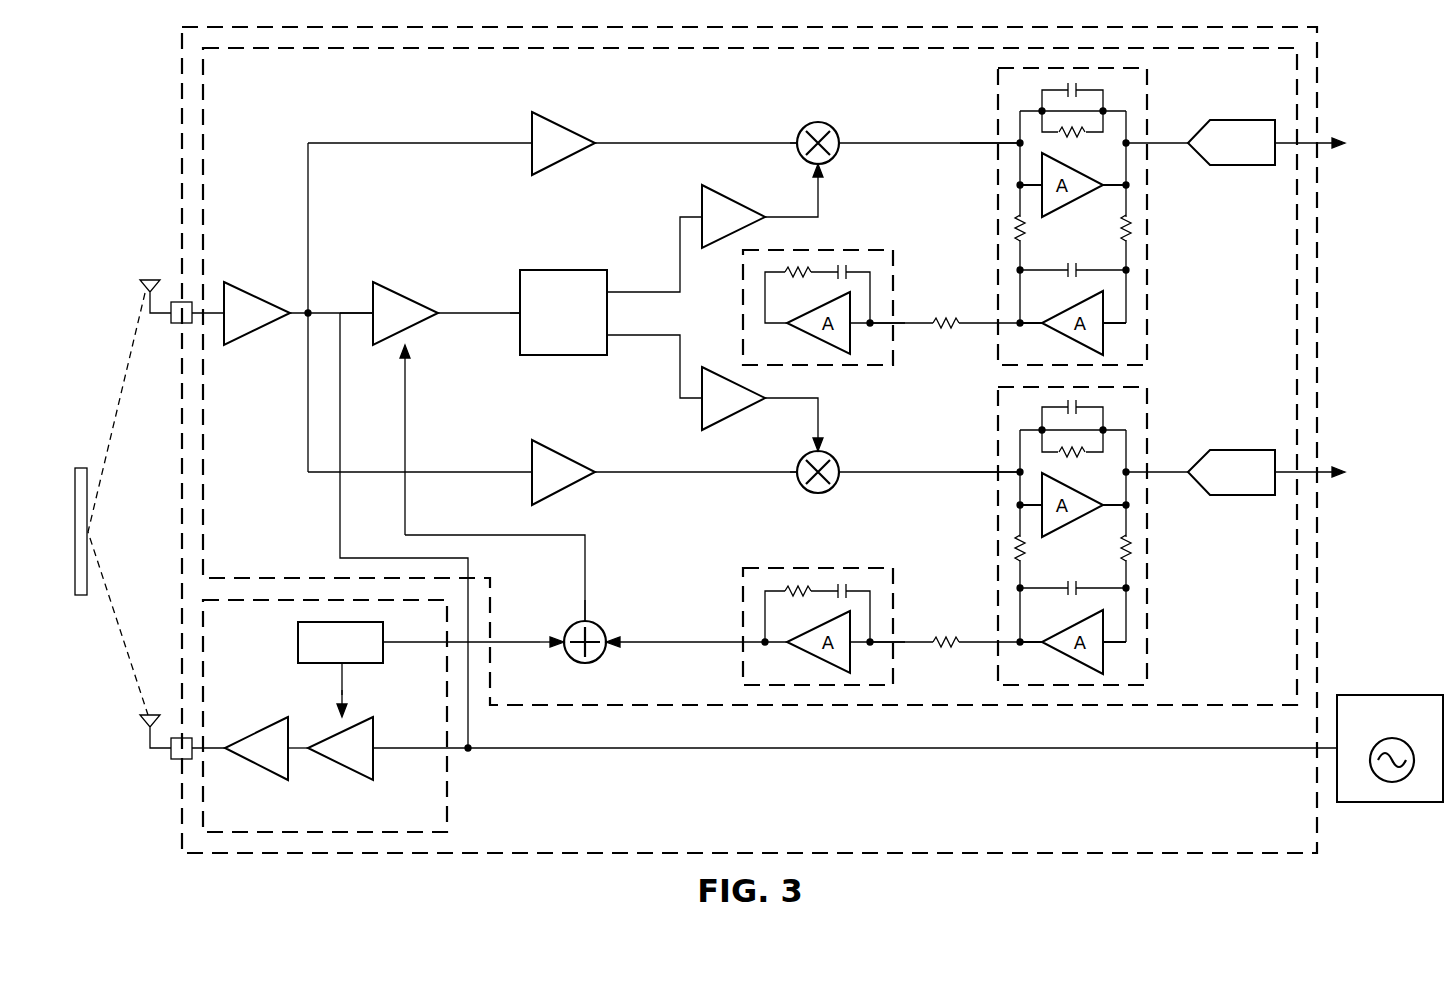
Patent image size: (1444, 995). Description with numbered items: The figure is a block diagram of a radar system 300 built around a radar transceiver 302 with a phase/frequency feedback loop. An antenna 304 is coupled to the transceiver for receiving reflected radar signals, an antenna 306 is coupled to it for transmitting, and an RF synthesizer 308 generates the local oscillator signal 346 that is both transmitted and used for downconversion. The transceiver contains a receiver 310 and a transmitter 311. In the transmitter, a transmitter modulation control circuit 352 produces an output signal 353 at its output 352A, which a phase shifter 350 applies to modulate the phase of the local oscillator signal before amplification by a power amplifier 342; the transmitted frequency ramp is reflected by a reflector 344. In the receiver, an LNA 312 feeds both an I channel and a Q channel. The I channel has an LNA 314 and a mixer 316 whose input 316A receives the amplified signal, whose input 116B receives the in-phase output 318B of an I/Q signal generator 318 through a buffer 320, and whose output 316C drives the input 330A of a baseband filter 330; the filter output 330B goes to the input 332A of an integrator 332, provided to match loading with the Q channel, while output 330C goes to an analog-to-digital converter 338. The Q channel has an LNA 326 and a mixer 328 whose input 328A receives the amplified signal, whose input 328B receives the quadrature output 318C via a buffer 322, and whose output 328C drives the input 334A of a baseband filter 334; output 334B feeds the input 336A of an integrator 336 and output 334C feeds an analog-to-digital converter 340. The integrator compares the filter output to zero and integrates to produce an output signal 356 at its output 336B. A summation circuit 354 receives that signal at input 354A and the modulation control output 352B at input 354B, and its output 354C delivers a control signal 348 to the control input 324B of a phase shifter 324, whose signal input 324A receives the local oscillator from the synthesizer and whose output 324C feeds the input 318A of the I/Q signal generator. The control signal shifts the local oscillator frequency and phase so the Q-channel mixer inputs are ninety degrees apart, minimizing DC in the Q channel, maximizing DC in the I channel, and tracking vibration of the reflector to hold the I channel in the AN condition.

The radar system 300 is at (152, 172).
The radar transceiver 302 is at (1317, 241).
The antenna 304 is at (143, 278).
The antenna 306 is at (140, 740).
The RF synthesizer 308 is at (1386, 803).
The receiver 310 is at (237, 391).
The transmitter 311 is at (447, 778).
The LNA 312 is at (240, 291).
The LNA 314 is at (567, 130).
The mixer 316 is at (812, 121).
The input 316A is at (798, 150).
The mixer LO input 116B is at (822, 190).
The output 316C is at (845, 140).
The I/Q signal generator 318 is at (560, 270).
The input 318A is at (511, 311).
The output 318B is at (620, 290).
The output 318C is at (622, 338).
The buffer 320 is at (700, 198).
The buffer 322 is at (700, 425).
The phase shifter 324 is at (395, 280).
The signal input 324A is at (352, 311).
The control input 324B is at (408, 353).
The output 324C is at (448, 311).
The LNA 326 is at (563, 440).
The mixer 328 is at (812, 494).
The input 328A is at (797, 468).
The input 328B is at (822, 425).
The output 328C is at (845, 481).
The baseband filter 330 is at (1148, 207).
The input 330A is at (976, 140).
The output 330B is at (976, 320).
The output 330C is at (1165, 140).
The integrator 332 is at (895, 257).
The input 332A is at (906, 331).
The baseband filter 334 is at (1148, 553).
The input 334A is at (976, 469).
The output 334B is at (976, 640).
The output 334C is at (1165, 478).
The integrator 336 is at (895, 572).
The input 336A is at (906, 649).
The output 336B is at (736, 649).
The analog-to-digital converter 338 is at (1245, 120).
The analog-to-digital converter 340 is at (1245, 497).
The power amplifier 342 is at (256, 778).
The reflector 344 is at (82, 598).
The local oscillator signal 346 is at (338, 553).
The control signal 348 is at (408, 498).
The phase shifter 350 is at (341, 778).
The transmitter modulation control circuit 352 is at (297, 650).
The transmit modulator first output 352A is at (336, 680).
The output 352B is at (386, 648).
The output signal 353 is at (346, 696).
The summation circuit 354 is at (598, 623).
The input 354A is at (615, 649).
The input 354B is at (560, 649).
The output 354C is at (583, 600).
The output signal 356 is at (672, 640).